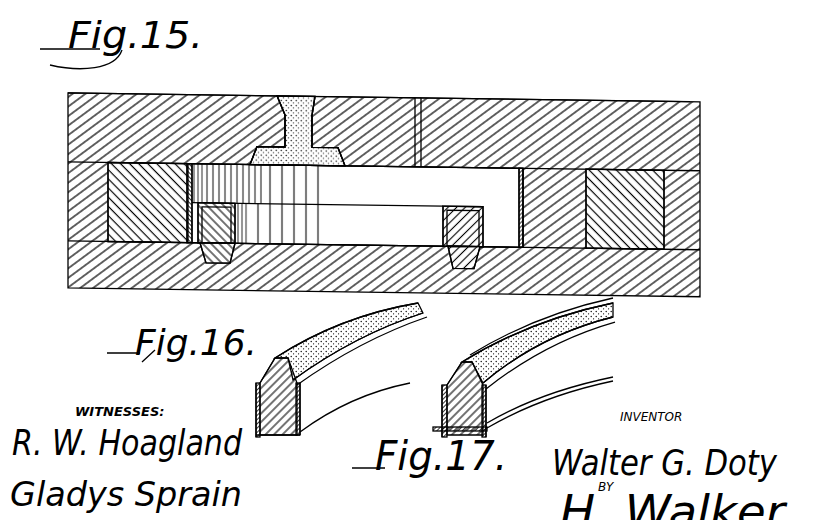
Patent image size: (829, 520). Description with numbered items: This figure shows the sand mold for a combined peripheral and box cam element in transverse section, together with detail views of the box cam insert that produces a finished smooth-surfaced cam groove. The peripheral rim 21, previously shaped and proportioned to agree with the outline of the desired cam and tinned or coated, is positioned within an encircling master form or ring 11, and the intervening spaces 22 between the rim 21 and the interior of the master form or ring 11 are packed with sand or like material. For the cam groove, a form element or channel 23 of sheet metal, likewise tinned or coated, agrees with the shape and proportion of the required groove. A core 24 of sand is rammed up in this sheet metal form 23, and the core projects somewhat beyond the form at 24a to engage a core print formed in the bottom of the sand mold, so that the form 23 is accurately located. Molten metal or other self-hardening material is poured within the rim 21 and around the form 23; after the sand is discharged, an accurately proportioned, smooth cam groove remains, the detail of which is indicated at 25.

In FIG. 15, the master form or ring 11 is at (130, 205).
In FIG. 15, the peripheral rim 21 is at (520, 180).
In FIG. 15, the intervening spaces 22 is at (566, 166).
In FIG. 15, the sheet metal form or channel 23 is at (443, 212).
In FIG. 16, the sheet metal form or channel 23 is at (328, 403).
In FIG. 15, the sand core 24 is at (224, 264).
In FIG. 16, the sand core 24 is at (332, 333).
In FIG. 17, the sand core 24 is at (446, 400).
In FIG. 15, the projecting portion of the core 24a is at (468, 268).
In FIG. 16, the projecting portion of the core 24a is at (262, 366).
In FIG. 17, the projecting portion of the core 24a is at (454, 373).
In FIG. 17, the groove band of ring 25 is at (488, 396).